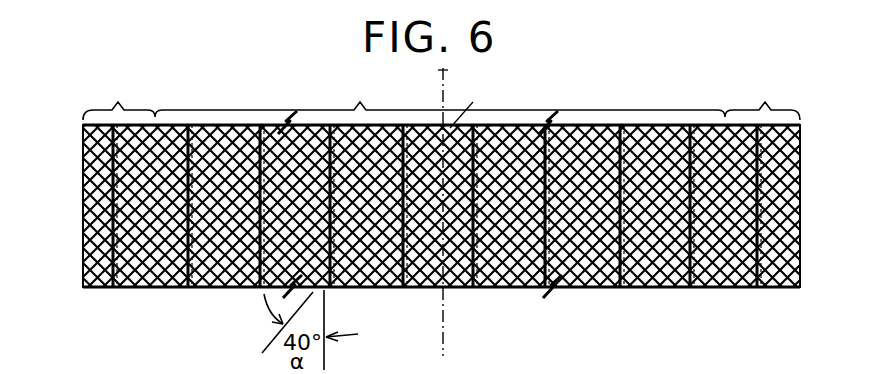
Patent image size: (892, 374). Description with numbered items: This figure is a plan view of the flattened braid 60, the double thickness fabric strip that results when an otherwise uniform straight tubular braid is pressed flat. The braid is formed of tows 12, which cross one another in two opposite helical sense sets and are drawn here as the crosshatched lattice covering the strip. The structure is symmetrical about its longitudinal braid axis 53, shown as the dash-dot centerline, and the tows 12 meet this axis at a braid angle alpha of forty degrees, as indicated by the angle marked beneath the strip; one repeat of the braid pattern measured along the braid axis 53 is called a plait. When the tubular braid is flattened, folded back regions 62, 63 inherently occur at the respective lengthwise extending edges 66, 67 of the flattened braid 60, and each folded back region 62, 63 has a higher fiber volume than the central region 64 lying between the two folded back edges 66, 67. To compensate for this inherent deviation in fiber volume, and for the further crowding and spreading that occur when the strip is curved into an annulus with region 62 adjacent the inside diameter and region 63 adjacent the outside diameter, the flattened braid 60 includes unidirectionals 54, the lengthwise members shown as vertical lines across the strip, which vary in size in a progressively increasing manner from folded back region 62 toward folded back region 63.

The flattened braid 60 is at (441, 197).
The unidirectionals 54 is at (258, 126).
The folded back region 62 is at (119, 89).
The central region 64 is at (440, 91).
The folded back region 63 is at (762, 93).
The braid axis 53 is at (445, 79).
The lengthwise extending edge 66 is at (83, 206).
The lengthwise extending edge 67 is at (800, 221).
The tows 12 is at (655, 289).